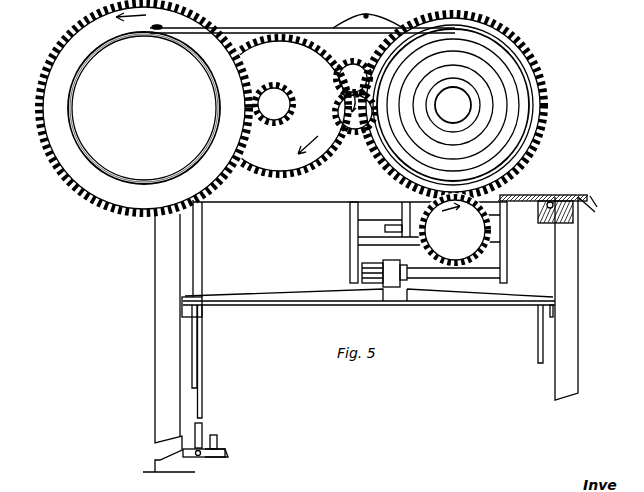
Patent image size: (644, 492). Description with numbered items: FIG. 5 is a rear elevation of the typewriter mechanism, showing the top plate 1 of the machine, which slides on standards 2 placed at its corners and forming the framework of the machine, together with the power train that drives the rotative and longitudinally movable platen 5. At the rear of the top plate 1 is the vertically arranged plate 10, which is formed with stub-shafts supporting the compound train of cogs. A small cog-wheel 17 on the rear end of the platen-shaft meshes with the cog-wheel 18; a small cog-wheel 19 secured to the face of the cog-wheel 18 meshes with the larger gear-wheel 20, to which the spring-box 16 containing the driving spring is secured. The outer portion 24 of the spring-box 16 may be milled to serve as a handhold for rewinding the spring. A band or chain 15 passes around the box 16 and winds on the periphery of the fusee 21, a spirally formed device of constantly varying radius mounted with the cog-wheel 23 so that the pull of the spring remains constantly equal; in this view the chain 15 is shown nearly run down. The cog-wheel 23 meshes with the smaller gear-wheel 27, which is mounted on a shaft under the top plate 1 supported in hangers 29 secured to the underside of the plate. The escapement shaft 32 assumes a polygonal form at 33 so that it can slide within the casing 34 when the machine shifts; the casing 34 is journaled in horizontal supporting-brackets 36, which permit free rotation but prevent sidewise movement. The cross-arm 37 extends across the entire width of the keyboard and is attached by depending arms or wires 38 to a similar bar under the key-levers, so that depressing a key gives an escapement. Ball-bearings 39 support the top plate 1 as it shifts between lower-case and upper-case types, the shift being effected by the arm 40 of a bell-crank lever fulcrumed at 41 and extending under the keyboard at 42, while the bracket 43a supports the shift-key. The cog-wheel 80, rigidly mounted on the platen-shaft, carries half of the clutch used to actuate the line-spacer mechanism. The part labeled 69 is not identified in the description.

The top plate 1 is at (576, 197).
The standards 2 is at (568, 279).
The platen 5 is at (335, 27).
The vertically-arranged plate 10 is at (339, 186).
The band or chain 15 is at (260, 33).
The spring-box 16 is at (144, 98).
The small cog-wheel 17 is at (352, 130).
The cog-wheel 18 is at (280, 106).
The small cog-wheel 19 is at (280, 103).
The larger gear-wheel 20 is at (144, 108).
The fusee 21 is at (453, 105).
The cog-wheel 23 is at (536, 69).
The outer portion of the spring-box 24 is at (74, 83).
The smaller gear-wheel 27 is at (455, 230).
The hangers 29 is at (508, 243).
The shaft 32 is at (508, 278).
The polygonal portion of the shaft 33 is at (376, 262).
The casing 34 is at (402, 262).
The horizontal supporting-brackets 36 is at (490, 300).
The cross-arm 37 is at (376, 303).
The depending arms or wires 38 is at (540, 343).
The ball-bearings 39 is at (547, 200).
The arm of the bell-crank lever 40 is at (200, 405).
The fulcrum of the bell-crank lever 41 is at (198, 456).
The portion of the bell-crank lever under the keyboard 42 is at (226, 453).
The bracket 43a is at (218, 443).
The guide 69 is at (368, 17).
The cog-wheel 80 is at (353, 69).